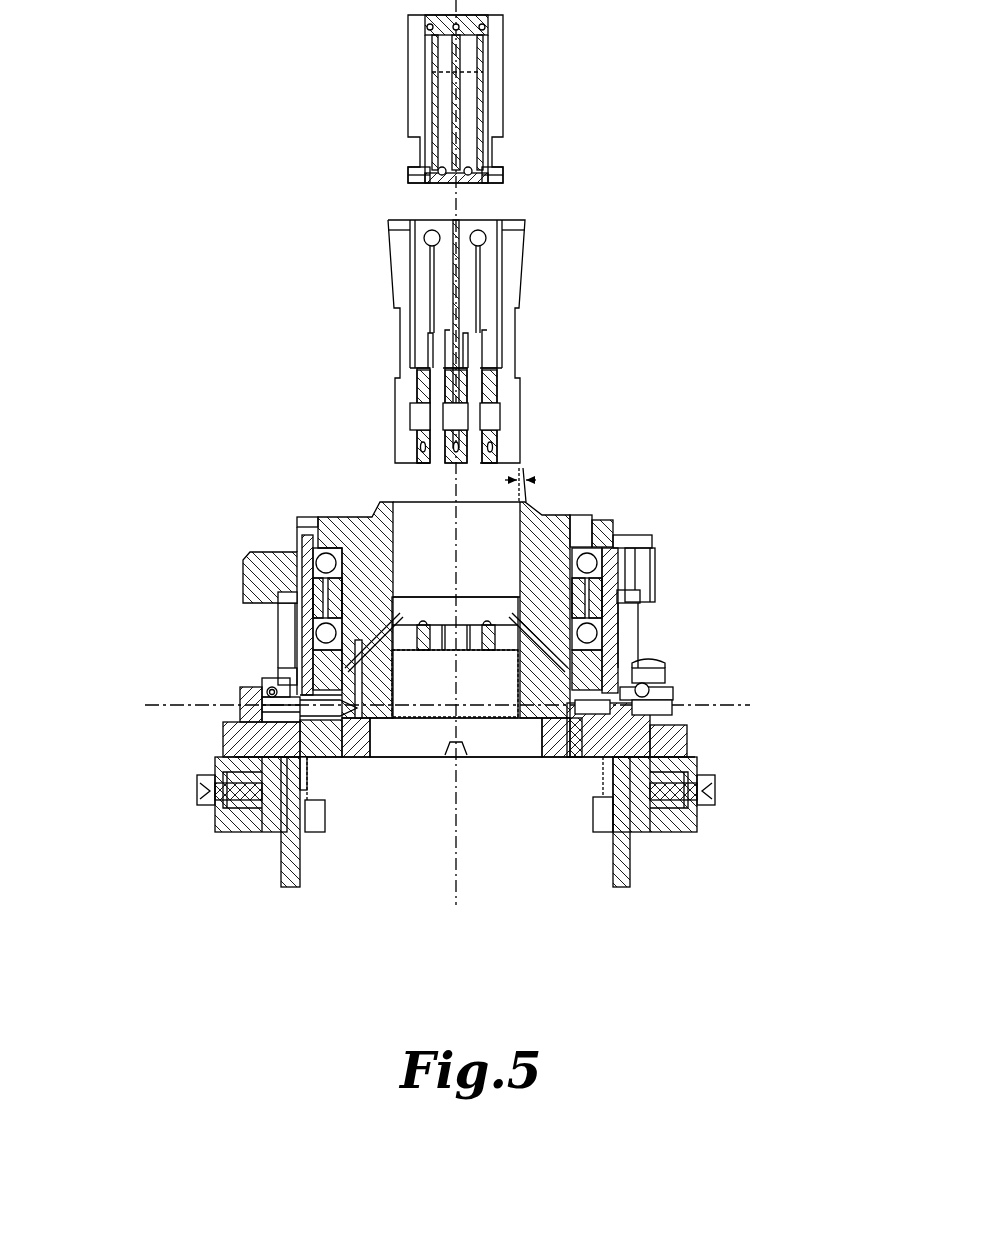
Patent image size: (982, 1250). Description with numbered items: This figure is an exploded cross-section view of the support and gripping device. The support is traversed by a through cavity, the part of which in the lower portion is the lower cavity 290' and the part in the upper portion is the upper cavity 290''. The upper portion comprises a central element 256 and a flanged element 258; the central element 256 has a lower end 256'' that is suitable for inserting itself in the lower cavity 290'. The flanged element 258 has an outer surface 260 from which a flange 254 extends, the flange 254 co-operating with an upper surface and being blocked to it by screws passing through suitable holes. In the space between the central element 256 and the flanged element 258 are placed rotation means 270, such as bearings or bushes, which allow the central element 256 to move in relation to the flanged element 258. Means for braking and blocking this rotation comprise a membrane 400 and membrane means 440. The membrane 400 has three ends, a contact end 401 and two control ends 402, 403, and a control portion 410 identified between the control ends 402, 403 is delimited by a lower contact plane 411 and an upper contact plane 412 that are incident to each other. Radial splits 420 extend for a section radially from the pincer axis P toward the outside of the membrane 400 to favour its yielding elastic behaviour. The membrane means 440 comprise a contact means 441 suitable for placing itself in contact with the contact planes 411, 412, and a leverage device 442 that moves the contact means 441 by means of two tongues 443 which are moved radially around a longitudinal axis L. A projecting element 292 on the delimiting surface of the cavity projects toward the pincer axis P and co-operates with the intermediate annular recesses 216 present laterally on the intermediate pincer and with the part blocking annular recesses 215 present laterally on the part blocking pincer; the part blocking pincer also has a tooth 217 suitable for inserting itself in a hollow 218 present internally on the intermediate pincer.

The part blocking annular recesses 215 is at (412, 152).
The tooth 217 is at (417, 178).
The intermediate annular recesses 216 is at (476, 347).
The hollow 218 is at (420, 417).
The upper cavity 290'' is at (402, 549).
The lower cavity 290' is at (465, 818).
The central element 256 is at (482, 549).
The lower end 256'' is at (456, 759).
The projecting element 292 is at (502, 640).
The flanged element 258 is at (652, 532).
The rotation means 270 is at (613, 533).
The flange 254 is at (640, 571).
The outer surface 260 is at (615, 622).
The membrane 400 is at (648, 672).
The control portion 410 is at (647, 695).
The lower contact plane 411 is at (613, 700).
The upper contact plane 412 is at (612, 720).
The radial splits 420 is at (592, 702).
The membrane means 440 is at (685, 707).
The contact means 441 is at (303, 702).
The leverage device 442 is at (197, 830).
The tongues 443 is at (290, 878).
The contact end 401 is at (335, 712).
The control end 402 is at (273, 732).
The control end 403 is at (280, 683).
The longitudinal axis L is at (170, 702).
The pincer axis P is at (458, 893).